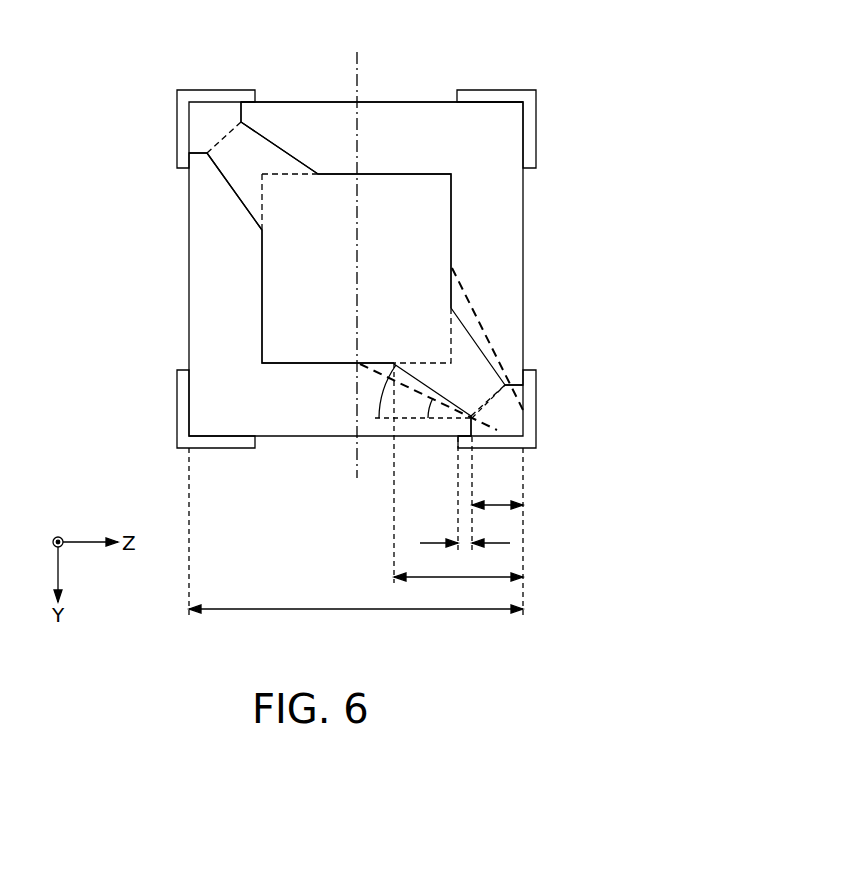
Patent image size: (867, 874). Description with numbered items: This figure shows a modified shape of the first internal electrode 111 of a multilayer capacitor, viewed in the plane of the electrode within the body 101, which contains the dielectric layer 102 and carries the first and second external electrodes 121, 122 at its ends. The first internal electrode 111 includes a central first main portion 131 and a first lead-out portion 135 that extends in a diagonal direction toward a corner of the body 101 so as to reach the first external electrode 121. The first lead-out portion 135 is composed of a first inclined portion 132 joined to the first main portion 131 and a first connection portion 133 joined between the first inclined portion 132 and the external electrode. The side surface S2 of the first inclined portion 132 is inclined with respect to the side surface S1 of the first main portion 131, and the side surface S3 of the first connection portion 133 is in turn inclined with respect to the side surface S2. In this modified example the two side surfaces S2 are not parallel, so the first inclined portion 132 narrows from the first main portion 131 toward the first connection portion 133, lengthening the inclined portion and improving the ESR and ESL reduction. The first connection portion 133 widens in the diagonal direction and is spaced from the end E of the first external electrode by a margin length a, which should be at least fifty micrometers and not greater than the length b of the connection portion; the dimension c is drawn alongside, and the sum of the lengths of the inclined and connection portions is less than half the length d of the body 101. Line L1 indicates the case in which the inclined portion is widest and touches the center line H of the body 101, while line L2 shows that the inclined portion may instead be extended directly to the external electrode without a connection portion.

The body 101 is at (423, 100).
The dielectric layer 102 is at (395, 115).
The first internal electrode 111 is at (254, 259).
The first external electrode 121 is at (213, 88).
The second external electrode 122 is at (496, 88).
The first main portion 131 is at (280, 293).
The first inclined portion 132 is at (237, 138).
The first connection portion 133 is at (205, 133).
The first lead-out portion 135 is at (278, 259).
The side surface of the first main portion S1 is at (375, 173).
The side surface of the first inclined portion S2 is at (283, 144).
The side surface of the first connection portion S3 is at (247, 113).
The line L1 is at (470, 304).
The line L2 is at (483, 437).
The center line H is at (356, 282).
The end of the first external electrode E is at (457, 437).
The margin length a is at (465, 555).
The length of the first connection portion b is at (497, 517).
The distance c is at (458, 588).
The length of the body d is at (356, 621).